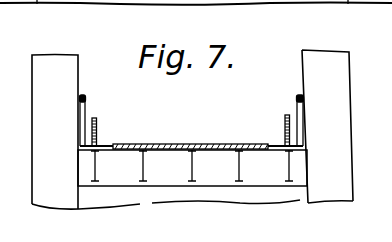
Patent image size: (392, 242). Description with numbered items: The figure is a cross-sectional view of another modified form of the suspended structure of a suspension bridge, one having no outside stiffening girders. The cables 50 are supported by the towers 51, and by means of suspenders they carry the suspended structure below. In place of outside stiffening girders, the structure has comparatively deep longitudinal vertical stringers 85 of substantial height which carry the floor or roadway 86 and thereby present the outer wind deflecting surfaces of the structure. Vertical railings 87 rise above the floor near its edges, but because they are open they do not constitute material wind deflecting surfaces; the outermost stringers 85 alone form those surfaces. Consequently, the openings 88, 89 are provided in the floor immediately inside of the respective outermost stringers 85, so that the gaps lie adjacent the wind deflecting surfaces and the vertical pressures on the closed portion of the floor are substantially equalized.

The cables 50 is at (85, 97).
The towers 51 is at (66, 59).
The longitudinal vertical stringers 85 is at (142, 169).
The floor or roadway 86 is at (176, 146).
The vertical railings 87 is at (100, 121).
The opening 88 is at (102, 146).
The opening 89 is at (280, 146).